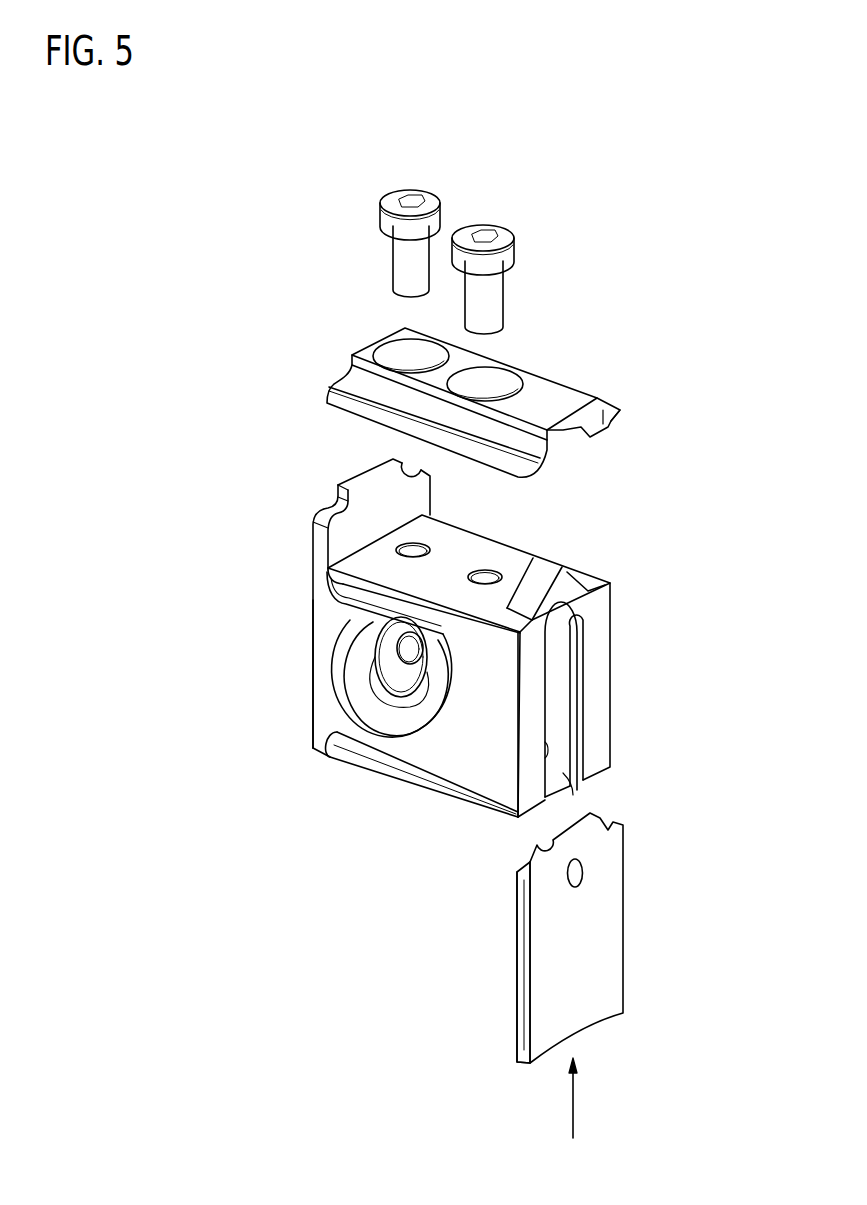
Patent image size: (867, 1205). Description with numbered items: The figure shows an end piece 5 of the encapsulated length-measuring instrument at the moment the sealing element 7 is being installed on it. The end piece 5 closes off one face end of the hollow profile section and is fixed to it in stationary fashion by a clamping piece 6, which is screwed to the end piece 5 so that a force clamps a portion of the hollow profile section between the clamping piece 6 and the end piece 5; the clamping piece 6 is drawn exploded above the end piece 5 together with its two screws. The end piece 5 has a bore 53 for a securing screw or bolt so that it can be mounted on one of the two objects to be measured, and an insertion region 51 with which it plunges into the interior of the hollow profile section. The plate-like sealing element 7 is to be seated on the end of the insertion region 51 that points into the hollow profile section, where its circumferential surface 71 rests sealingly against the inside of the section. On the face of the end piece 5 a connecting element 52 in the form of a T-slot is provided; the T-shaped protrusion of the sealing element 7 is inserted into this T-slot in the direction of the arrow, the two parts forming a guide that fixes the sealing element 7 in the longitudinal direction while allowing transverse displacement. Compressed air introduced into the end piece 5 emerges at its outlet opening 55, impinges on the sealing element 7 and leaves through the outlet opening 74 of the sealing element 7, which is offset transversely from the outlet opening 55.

The end piece 5 is at (598, 642).
The clamping piece 6 is at (542, 400).
The sealing element 7 is at (558, 938).
The insertion region 51 is at (453, 770).
The connecting element 52 is at (520, 822).
The bore 53 is at (420, 678).
The outlet opening 55 is at (543, 747).
The circumferential surface 71 is at (522, 983).
The outlet opening 74 is at (583, 868).